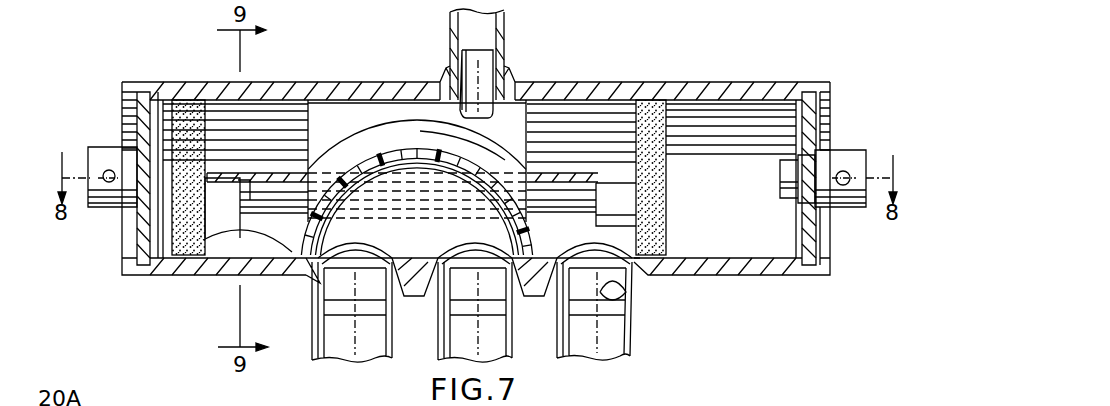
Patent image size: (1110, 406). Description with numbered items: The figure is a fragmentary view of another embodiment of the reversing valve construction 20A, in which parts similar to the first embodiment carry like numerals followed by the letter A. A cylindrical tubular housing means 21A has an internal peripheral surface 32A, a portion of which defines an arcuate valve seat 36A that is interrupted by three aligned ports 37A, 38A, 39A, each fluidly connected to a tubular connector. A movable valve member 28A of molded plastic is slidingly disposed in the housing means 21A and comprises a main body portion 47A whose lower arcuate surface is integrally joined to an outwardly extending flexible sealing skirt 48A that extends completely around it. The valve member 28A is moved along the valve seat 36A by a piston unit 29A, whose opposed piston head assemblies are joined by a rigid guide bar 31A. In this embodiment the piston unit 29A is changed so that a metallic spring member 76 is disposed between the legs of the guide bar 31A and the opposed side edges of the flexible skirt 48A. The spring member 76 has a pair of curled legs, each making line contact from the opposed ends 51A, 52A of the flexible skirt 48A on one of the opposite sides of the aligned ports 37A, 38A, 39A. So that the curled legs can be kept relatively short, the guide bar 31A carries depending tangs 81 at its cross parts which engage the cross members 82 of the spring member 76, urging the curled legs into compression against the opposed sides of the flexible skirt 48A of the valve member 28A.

The reversing valve construction 20A is at (853, 97).
The tubular housing means 21A is at (594, 84).
The valve member 28A is at (398, 148).
The piston unit 29A is at (580, 140).
The guide bar 31A is at (292, 172).
The internal peripheral surface 32A is at (735, 96).
The valve seat 36A is at (312, 265).
The port 37A is at (320, 300).
The port 38A is at (448, 300).
The port 39A is at (632, 300).
The main body portion 47A is at (470, 170).
The flexible sealing skirt 48A is at (300, 258).
The end of flexible skirt 51A is at (240, 228).
The end of flexible skirt 52A is at (660, 234).
The spring member 76 is at (268, 210).
The depending tangs 81 is at (237, 162).
The cross members 82 is at (272, 190).